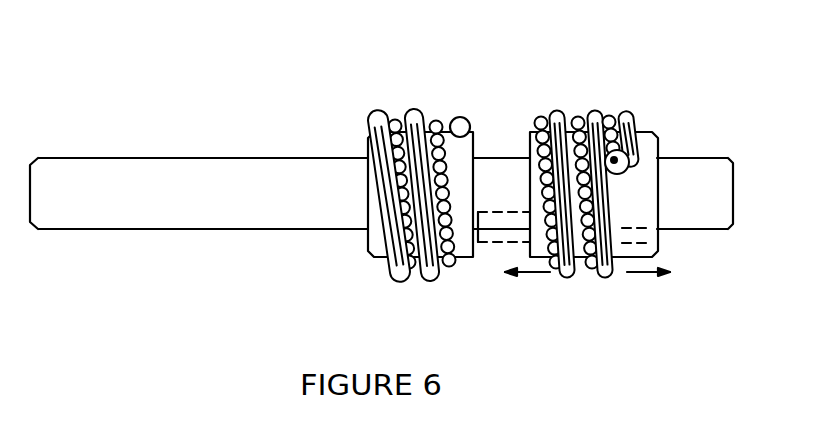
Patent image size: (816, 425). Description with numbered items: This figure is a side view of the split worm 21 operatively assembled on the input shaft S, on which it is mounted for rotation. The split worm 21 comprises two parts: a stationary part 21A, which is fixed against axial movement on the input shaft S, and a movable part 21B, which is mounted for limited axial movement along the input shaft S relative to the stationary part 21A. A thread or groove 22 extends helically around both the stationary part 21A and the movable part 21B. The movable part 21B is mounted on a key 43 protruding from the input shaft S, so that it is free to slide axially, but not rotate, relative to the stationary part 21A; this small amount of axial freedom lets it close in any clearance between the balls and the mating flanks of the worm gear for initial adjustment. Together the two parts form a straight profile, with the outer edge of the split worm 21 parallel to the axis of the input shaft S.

The input shaft S is at (195, 228).
The split worm 21 is at (538, 107).
The stationary part 21A is at (443, 140).
The movable part 21B is at (638, 143).
The thread or groove 22 is at (579, 250).
The key 43 is at (492, 244).